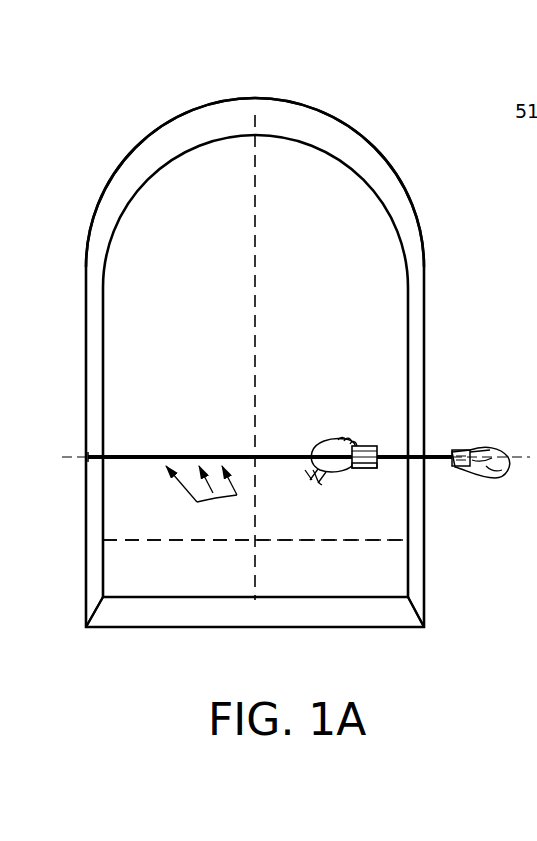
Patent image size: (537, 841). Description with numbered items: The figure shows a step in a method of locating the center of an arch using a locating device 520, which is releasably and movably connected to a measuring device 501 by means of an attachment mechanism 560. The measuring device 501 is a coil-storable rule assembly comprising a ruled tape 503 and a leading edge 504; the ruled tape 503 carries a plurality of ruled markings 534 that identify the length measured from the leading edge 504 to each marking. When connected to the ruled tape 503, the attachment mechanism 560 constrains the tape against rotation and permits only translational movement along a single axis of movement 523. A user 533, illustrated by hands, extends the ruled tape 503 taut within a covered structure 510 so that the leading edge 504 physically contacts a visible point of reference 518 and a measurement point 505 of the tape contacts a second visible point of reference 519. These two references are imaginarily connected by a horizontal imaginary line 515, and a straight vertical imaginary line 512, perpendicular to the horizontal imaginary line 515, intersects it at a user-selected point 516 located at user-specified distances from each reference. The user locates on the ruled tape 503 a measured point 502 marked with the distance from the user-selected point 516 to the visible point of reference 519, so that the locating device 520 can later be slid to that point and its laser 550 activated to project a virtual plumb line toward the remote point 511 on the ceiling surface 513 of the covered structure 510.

The measuring device 501 is at (452, 452).
The measured point 502 is at (255, 455).
The ruled tape 503 is at (120, 455).
The leading edge 504 is at (85, 460).
The measurement point 505 is at (428, 464).
The covered structure 510 is at (383, 125).
The remote point 511 is at (259, 113).
The straight vertical imaginary line 512 is at (255, 342).
The ceiling surface 513 is at (187, 128).
The horizontal imaginary line 515 is at (165, 545).
The user-selected point 516 is at (261, 546).
The visible point of reference 518 is at (100, 585).
The visible point of reference 519 is at (412, 584).
The locating device 520 is at (350, 442).
The single axis of movement 523 is at (518, 457).
The user 533 is at (323, 480).
The ruled markings 534 is at (197, 496).
The laser 550 is at (368, 444).
The attachment mechanism 560 is at (358, 470).